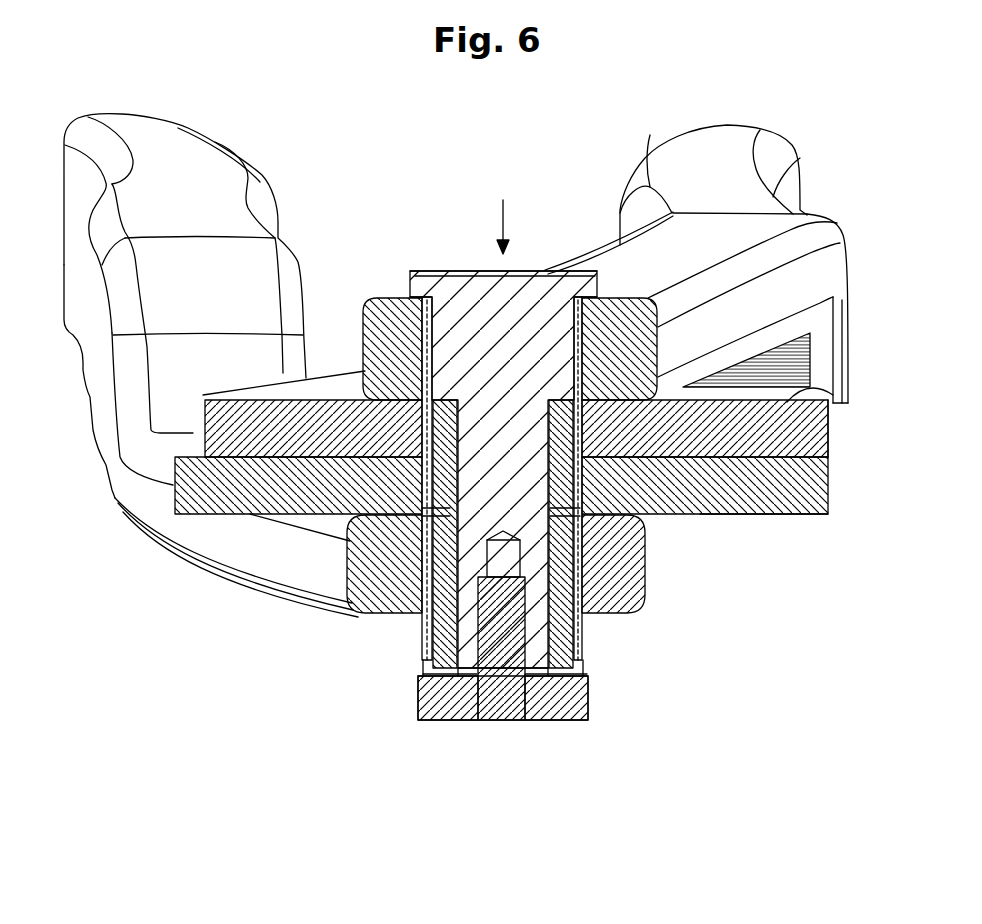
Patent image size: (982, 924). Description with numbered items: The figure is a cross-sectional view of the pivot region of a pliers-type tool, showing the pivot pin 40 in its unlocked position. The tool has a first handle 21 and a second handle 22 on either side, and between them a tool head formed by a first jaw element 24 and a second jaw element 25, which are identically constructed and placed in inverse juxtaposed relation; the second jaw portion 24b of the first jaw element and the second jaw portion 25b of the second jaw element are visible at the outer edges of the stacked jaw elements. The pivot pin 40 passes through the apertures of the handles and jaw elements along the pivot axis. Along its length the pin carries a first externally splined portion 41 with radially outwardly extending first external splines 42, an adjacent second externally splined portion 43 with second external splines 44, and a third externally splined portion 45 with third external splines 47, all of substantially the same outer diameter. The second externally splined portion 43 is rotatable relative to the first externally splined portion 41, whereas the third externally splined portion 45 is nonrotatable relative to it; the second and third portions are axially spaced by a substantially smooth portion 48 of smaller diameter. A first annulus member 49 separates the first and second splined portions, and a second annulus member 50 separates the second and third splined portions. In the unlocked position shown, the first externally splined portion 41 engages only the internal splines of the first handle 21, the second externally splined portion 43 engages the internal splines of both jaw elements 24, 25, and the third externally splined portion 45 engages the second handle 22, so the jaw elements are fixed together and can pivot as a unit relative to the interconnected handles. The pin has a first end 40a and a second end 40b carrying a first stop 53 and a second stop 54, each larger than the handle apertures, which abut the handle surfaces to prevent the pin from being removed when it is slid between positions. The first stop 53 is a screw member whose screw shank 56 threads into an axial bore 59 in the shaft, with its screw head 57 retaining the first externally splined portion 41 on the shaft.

The first handle 21 is at (245, 202).
The second handle 22 is at (686, 162).
The first jaw element 24 is at (786, 500).
The second jaw portion of first jaw element 24b is at (745, 516).
The second jaw element 25 is at (817, 437).
The second jaw portion of second jaw element 25b is at (783, 410).
The pivot pin 40 is at (510, 293).
The first end of pivot pin 40a is at (583, 673).
The second end of pivot pin 40b is at (447, 288).
The first externally splined portion 41 is at (440, 633).
The first external splines 42 is at (437, 597).
The second externally splined portion 43 is at (437, 510).
The second external splines 44 is at (425, 508).
The third externally splined portion 45 is at (410, 293).
The third external splines 47 is at (370, 310).
The substantially smooth portion 48 is at (580, 373).
The first annulus member 49 is at (632, 603).
The second annulus member 50 is at (578, 403).
The first stop 53 is at (587, 708).
The second stop 54 is at (410, 297).
The screw shank 56 is at (453, 675).
The screw head 57 is at (488, 712).
The axial bore 59 is at (520, 552).